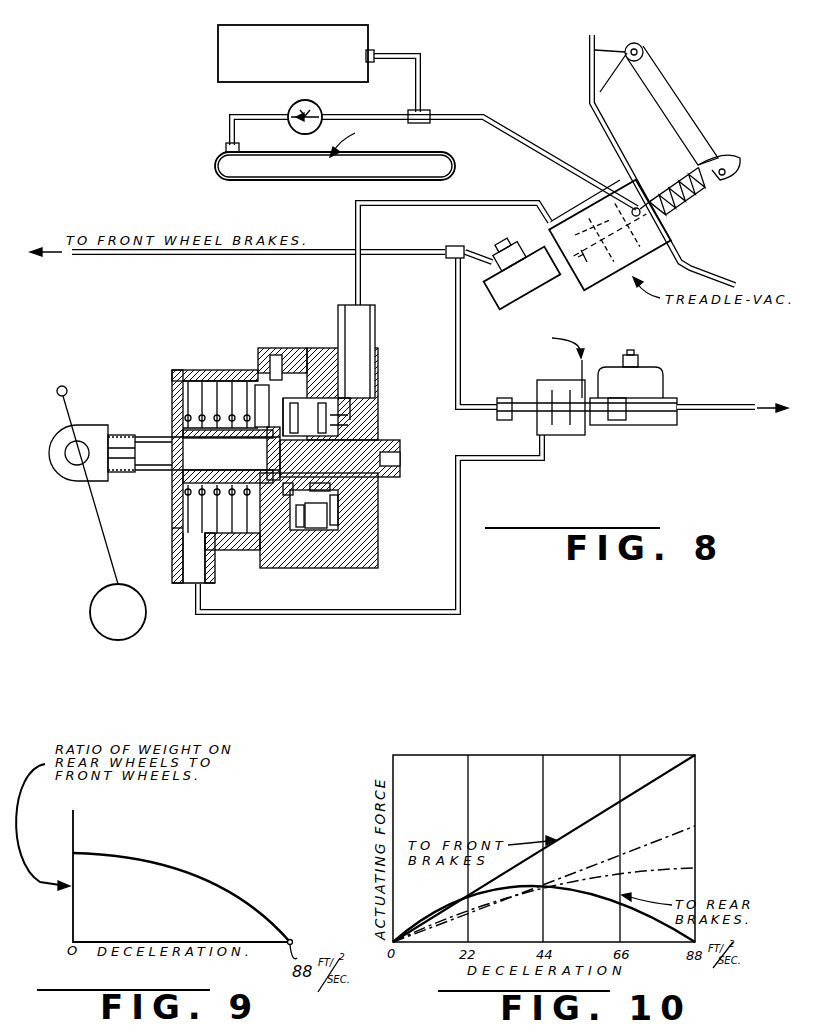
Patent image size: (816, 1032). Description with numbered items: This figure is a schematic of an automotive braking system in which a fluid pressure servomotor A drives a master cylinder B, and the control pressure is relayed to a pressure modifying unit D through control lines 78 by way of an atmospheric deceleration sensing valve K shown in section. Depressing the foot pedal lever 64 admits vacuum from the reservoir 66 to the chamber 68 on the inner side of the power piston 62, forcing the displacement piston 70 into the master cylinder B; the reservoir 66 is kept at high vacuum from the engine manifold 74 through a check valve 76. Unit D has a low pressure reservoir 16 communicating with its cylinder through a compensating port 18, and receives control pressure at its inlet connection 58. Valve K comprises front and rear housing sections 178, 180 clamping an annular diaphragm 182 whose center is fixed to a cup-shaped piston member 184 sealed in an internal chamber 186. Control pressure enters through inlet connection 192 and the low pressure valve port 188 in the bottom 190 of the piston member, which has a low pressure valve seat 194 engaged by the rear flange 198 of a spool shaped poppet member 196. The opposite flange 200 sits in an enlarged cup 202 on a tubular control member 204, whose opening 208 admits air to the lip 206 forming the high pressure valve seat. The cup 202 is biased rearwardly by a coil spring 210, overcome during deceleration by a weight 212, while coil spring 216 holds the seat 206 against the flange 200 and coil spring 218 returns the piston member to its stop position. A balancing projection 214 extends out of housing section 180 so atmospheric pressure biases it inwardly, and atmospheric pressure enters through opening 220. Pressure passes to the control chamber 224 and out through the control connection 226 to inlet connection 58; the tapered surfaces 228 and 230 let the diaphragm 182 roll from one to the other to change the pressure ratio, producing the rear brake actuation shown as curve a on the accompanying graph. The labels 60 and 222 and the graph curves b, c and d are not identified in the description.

The reservoir 66 is at (218, 33).
The check valve 76 is at (320, 108).
The manifold 74 is at (295, 175).
The control lines 78 is at (430, 206).
The foot pedal lever 64 is at (722, 148).
The power piston 62 is at (665, 228).
The chamber 68 is at (585, 233).
The displacement piston 70 is at (583, 259).
The fluid pressure servomotor A is at (575, 229).
The master cylinder B is at (527, 287).
The pressure modifying unit D is at (628, 375).
The atmospheric vent line 60 is at (585, 355).
The low pressure reservoir 16 is at (638, 390).
The compensating port 18 is at (625, 401).
The inlet connection 58 is at (406, 613).
The atmospheric deceleration sensing valve K is at (236, 458).
The coil spring 210 is at (170, 368).
The opening 208 is at (160, 437).
The tubular control member 204 is at (125, 474).
The control chamber 224 is at (172, 528).
The weight 212 is at (100, 598).
The control connection 226 is at (180, 586).
The enlarged cup 202 is at (210, 385).
The front housing section 178 is at (225, 385).
The coil spring 218 is at (262, 388).
The surface 230 is at (275, 378).
The annular diaphragm 182 is at (282, 398).
The opening 220 is at (287, 355).
The piston member 184 is at (312, 356).
The inlet connection 192 is at (378, 310).
The rear housing section 180 is at (380, 356).
The bottom 190 is at (350, 410).
The low pressure valve seat 194 is at (356, 416).
The balancing projection 214 is at (392, 442).
The flange 200 is at (401, 455).
The spool shaped poppet member 196 is at (267, 458).
The low pressure valve port 188 is at (355, 499).
The internal chamber 186 is at (355, 519).
The rear flange 198 is at (355, 545).
The coil spring 216 is at (322, 492).
The lip 206 is at (328, 530).
The valve stem 222 is at (298, 530).
The surface 228 is at (288, 540).
The curve a is at (600, 897).
The front brake force line b is at (616, 806).
The curve c is at (640, 847).
The curve d is at (680, 875).